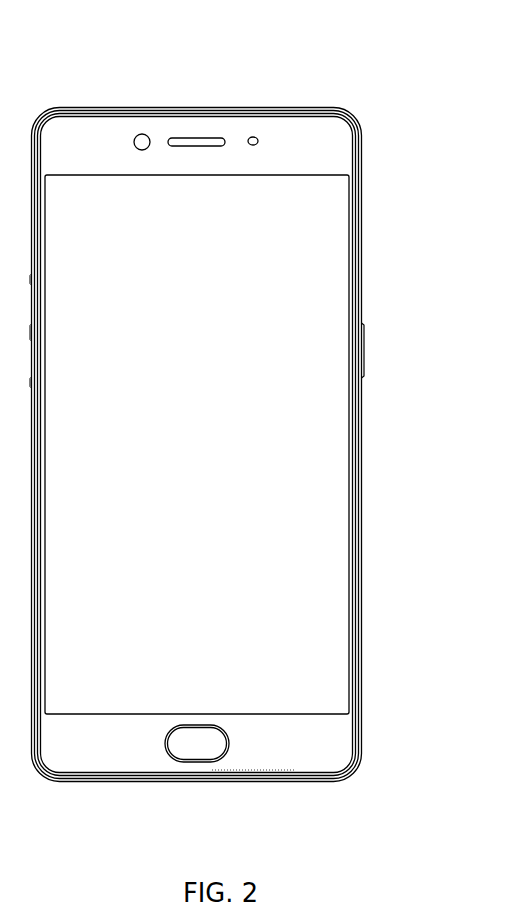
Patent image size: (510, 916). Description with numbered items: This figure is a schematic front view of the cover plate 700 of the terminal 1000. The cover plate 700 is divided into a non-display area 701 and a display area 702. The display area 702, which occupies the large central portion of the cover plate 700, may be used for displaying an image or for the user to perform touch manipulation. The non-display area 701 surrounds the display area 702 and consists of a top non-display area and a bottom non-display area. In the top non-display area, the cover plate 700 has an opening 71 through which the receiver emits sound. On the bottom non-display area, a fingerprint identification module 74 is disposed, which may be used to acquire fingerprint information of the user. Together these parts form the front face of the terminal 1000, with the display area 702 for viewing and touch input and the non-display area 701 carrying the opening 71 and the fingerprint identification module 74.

The terminal 1000 is at (406, 44).
The cover plate 700 is at (125, 138).
The opening 71 is at (208, 137).
The non-display area 701 is at (325, 151).
The display area 702 is at (336, 478).
The fingerprint identification module 74 is at (190, 743).